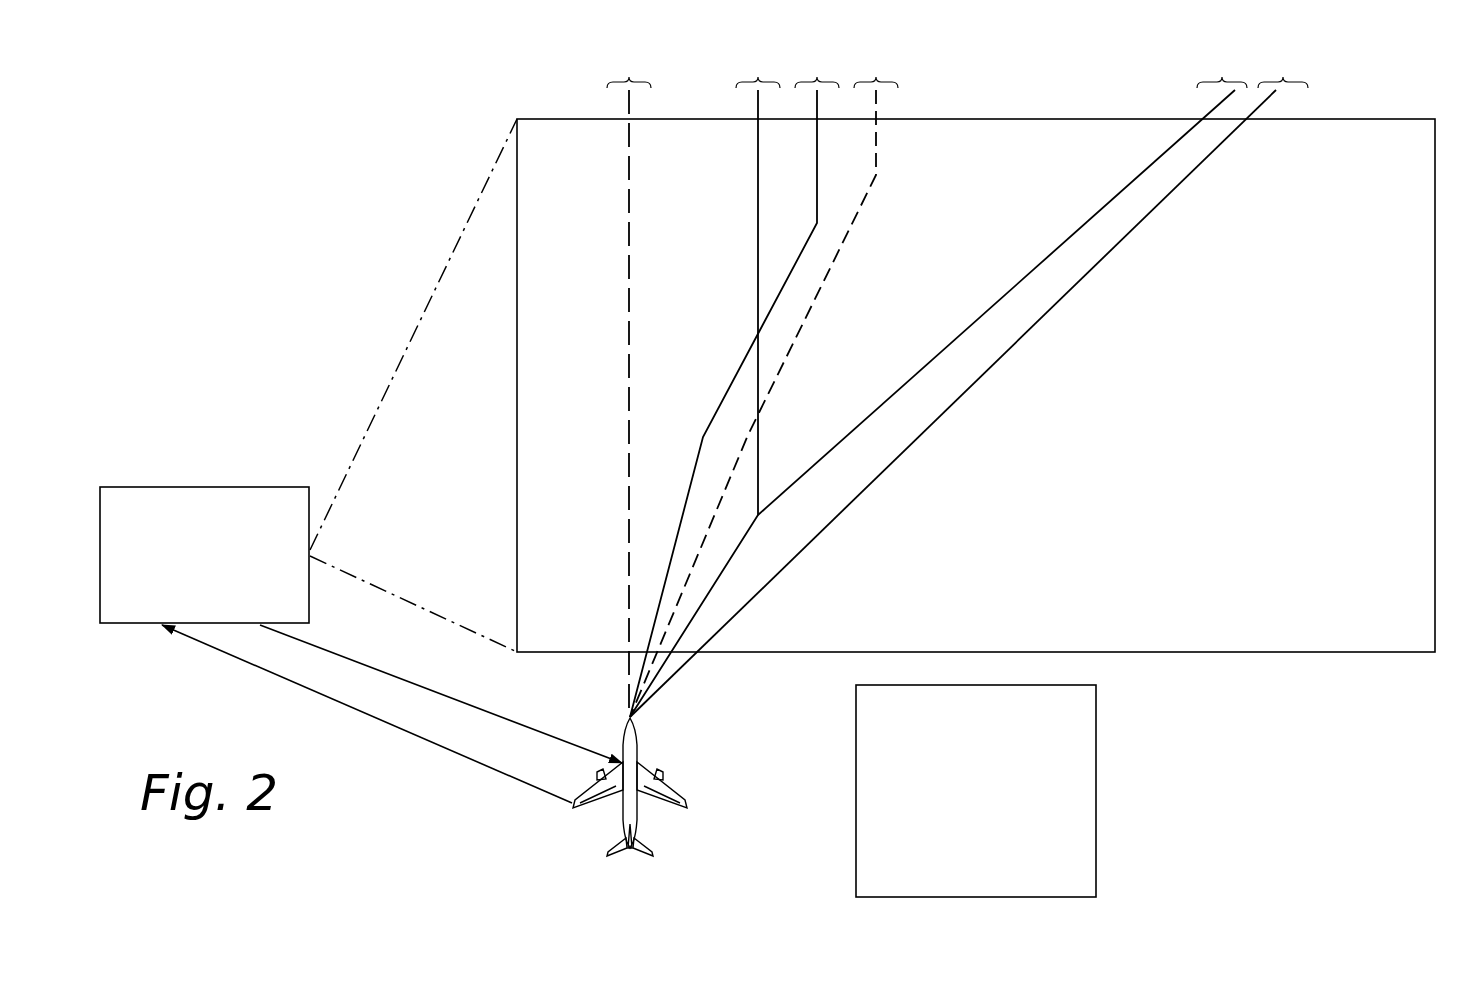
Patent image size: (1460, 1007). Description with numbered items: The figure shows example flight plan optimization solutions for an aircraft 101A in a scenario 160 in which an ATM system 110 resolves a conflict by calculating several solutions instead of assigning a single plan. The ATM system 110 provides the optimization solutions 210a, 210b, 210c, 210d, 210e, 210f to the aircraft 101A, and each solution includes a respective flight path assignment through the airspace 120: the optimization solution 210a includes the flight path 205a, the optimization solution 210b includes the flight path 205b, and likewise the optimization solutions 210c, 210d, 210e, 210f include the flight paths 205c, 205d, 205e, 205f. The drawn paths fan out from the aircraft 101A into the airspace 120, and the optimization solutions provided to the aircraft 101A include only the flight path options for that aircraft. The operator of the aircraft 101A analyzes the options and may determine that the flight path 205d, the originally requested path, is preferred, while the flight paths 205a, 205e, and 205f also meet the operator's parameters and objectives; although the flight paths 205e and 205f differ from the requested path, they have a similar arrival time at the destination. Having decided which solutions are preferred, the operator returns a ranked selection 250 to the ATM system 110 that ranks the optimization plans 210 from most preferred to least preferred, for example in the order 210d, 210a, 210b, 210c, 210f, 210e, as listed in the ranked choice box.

The scenario 160 is at (208, 117).
The airspace 120 is at (1350, 119).
The ATM system 110 is at (180, 487).
The optimization solution 210a is at (630, 68).
The optimization solution 210b is at (759, 68).
The optimization solution 210c is at (819, 68).
The optimization solution 210d is at (879, 68).
The optimization solution 210e is at (1223, 68).
The optimization solution 210f is at (1284, 68).
The flight path 205a is at (627, 156).
The flight path 205b is at (756, 156).
The flight path 205c is at (745, 360).
The flight path 205d is at (878, 150).
The flight path 205e is at (1138, 177).
The flight path 205f is at (1131, 231).
The optimization plans 210 is at (500, 718).
The ranked selection 250 is at (475, 765).
The aircraft 101A is at (640, 748).